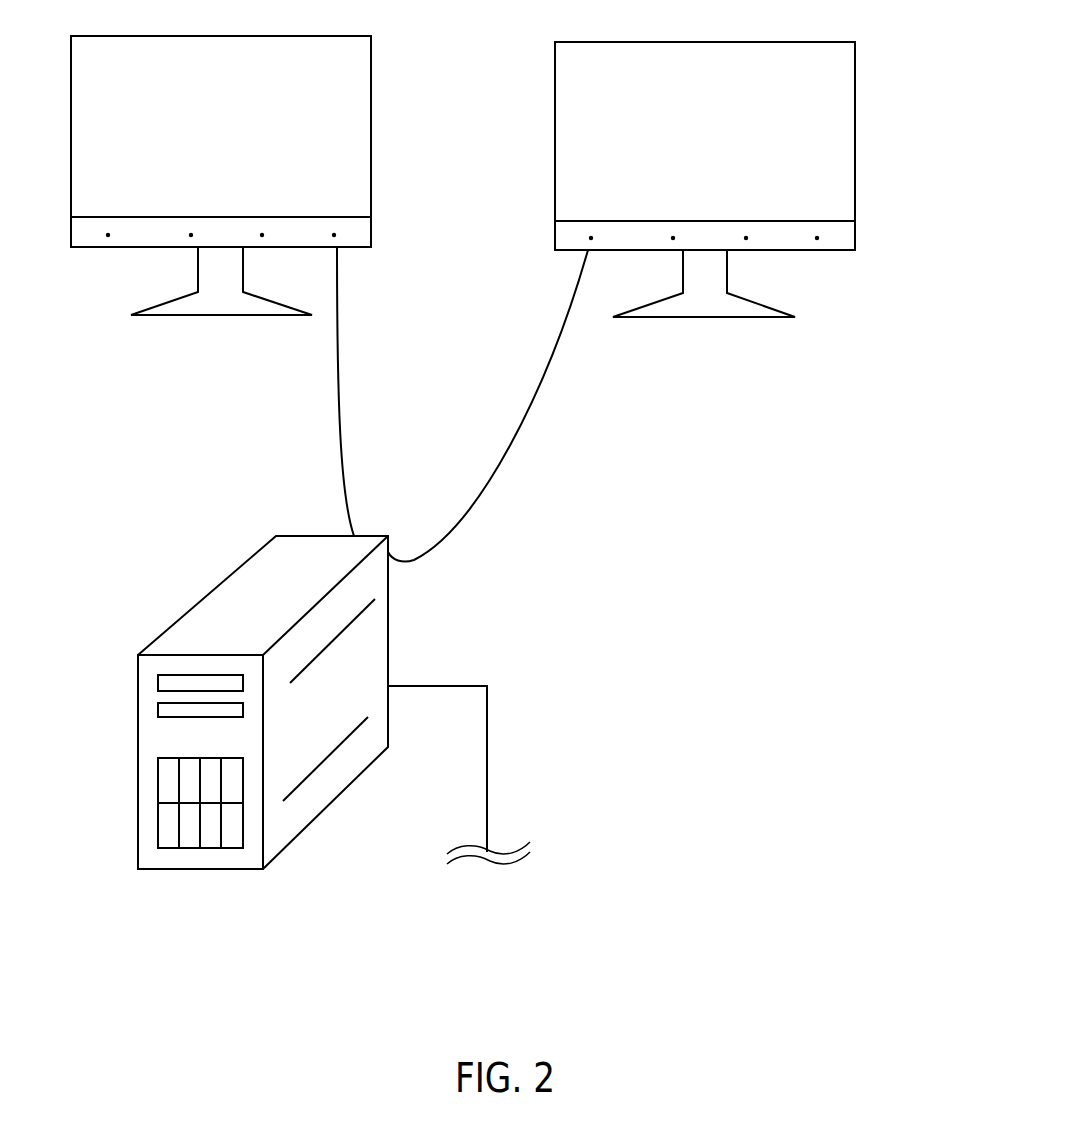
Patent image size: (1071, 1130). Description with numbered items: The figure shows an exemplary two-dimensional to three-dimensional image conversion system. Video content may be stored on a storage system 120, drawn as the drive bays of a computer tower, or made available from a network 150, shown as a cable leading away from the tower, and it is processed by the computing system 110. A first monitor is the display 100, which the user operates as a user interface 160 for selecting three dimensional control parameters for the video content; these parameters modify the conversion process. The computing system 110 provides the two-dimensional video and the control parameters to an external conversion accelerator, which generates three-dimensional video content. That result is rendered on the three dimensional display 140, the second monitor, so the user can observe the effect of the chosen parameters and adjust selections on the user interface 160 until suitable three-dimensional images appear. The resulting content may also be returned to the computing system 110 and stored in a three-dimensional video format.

The display 100 is at (372, 105).
The user interface 160 is at (238, 154).
The three dimensional display 140 is at (855, 103).
The computing system 110 is at (388, 718).
The storage system 120 is at (158, 803).
The network 150 is at (487, 805).